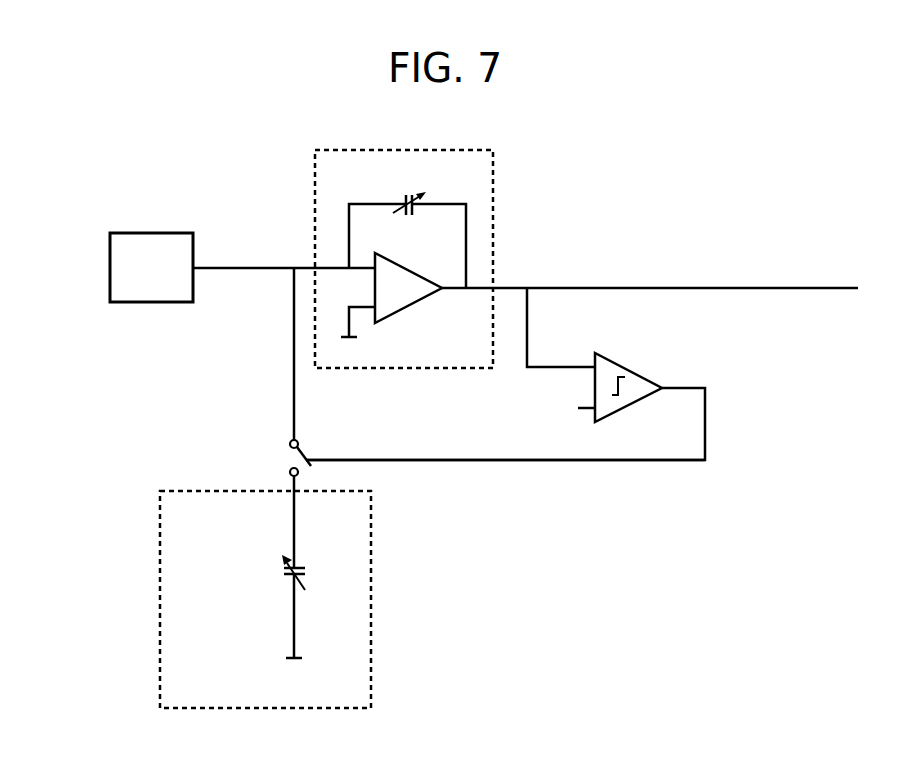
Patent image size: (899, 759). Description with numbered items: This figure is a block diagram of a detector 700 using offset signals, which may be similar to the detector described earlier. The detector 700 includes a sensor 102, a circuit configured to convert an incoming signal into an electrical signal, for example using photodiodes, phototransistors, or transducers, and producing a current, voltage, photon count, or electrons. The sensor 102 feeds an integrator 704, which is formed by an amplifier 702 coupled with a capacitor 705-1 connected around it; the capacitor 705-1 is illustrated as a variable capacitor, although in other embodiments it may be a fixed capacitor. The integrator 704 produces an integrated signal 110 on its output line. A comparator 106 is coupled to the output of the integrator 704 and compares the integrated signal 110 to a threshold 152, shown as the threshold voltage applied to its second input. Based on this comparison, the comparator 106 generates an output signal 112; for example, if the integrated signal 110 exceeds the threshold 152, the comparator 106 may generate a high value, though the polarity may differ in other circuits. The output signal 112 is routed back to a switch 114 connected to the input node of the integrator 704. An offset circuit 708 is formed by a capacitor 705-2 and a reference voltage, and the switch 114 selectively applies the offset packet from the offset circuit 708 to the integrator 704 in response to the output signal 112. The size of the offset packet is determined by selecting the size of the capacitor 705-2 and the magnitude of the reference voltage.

The detector 700 is at (111, 134).
The sensor 102 is at (151, 267).
The integrator 704 is at (404, 368).
The capacitor 705-1 is at (402, 195).
The amplifier 702 is at (410, 304).
The integrated signal 110 is at (678, 288).
The comparator 106 is at (640, 368).
The threshold 152 is at (543, 407).
The output signal 112 is at (622, 460).
The switch 114 is at (290, 444).
The offset circuit 708 is at (371, 573).
The capacitor 705-2 is at (280, 555).